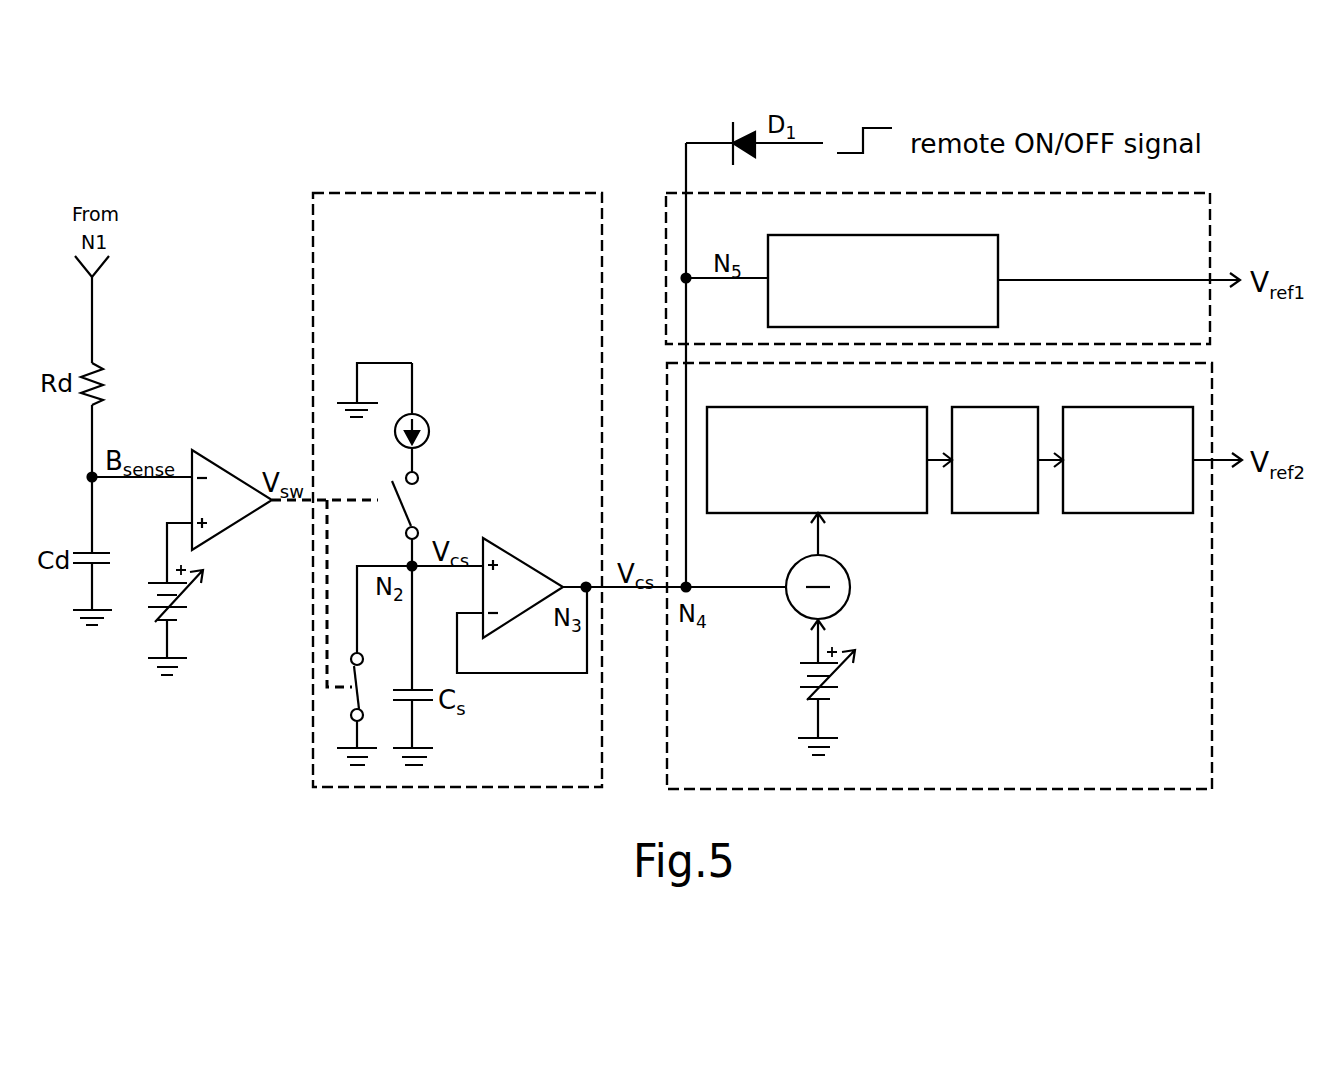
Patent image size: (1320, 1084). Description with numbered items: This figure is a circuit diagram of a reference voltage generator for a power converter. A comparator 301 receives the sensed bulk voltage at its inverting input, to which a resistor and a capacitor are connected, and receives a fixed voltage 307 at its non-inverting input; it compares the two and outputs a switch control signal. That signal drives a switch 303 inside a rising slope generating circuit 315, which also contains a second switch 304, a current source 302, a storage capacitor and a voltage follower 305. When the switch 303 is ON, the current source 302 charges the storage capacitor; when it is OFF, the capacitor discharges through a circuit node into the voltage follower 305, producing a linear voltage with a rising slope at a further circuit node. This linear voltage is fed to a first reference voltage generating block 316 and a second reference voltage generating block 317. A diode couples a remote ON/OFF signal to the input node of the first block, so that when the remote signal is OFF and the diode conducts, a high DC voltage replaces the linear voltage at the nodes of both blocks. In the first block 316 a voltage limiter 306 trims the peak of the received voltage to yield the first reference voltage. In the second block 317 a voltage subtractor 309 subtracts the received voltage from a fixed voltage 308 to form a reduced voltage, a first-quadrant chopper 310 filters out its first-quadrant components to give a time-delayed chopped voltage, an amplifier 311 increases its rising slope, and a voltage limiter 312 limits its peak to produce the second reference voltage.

The comparator 301 is at (201, 462).
The current source 302 is at (426, 416).
The switch 303 is at (416, 510).
The switch 304 is at (350, 698).
The voltage follower 305 is at (517, 572).
The voltage limiter 306 is at (970, 248).
The fixed voltage 307 is at (193, 602).
The fixed voltage 308 is at (842, 682).
The voltage subtractor 309 is at (837, 572).
The first-quadrant chopper 310 is at (887, 413).
The amplifier 311 is at (1008, 415).
The voltage limiter 312 is at (1127, 415).
The rising slope generating circuit 315 is at (527, 207).
The first reference voltage generating block 316 is at (1155, 207).
The second reference voltage generating block 317 is at (1200, 697).